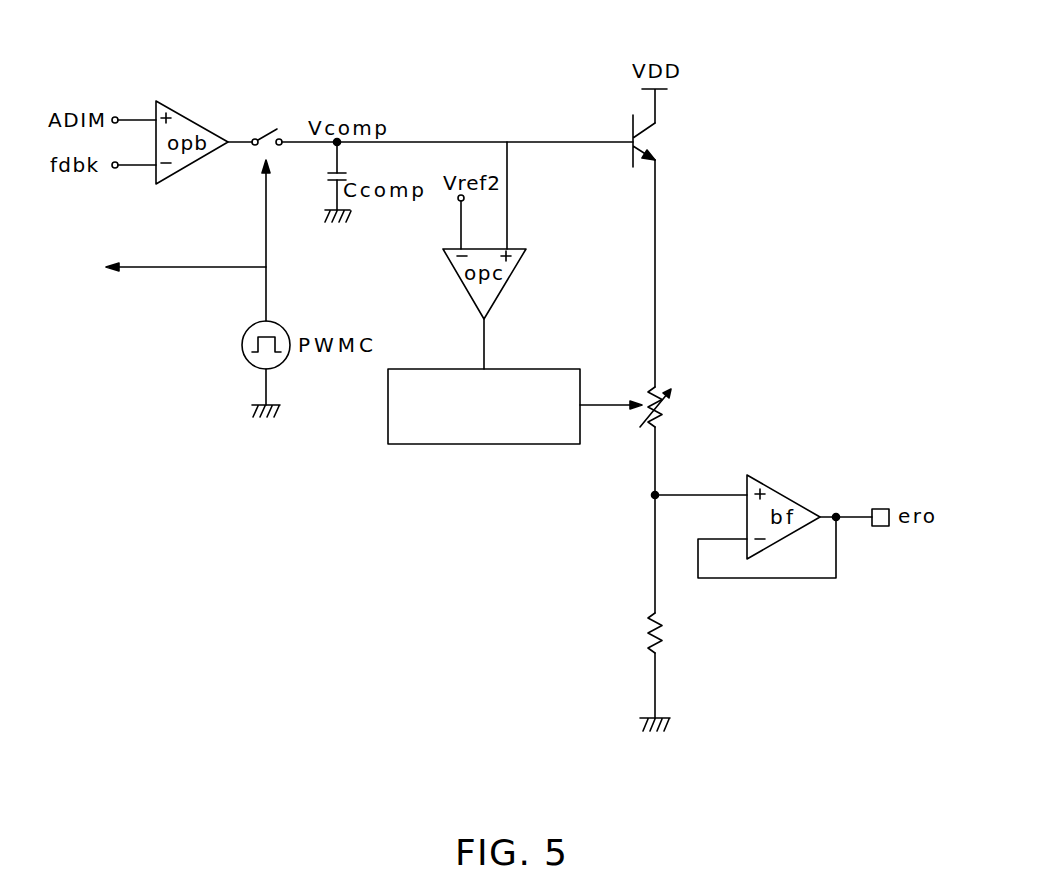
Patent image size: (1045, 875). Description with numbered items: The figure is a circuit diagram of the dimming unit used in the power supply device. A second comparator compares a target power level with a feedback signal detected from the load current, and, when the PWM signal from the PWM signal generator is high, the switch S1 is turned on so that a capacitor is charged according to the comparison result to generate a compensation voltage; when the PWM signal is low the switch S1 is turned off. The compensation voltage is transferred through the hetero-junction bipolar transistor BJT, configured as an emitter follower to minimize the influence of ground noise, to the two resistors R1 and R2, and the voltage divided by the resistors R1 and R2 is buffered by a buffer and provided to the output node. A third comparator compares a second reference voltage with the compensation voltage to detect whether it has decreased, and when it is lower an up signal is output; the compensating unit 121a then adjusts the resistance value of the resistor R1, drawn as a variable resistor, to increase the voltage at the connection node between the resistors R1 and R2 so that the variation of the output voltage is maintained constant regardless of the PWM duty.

The compensating unit 121a is at (521, 369).
The switch S1 is at (269, 120).
The resistor R1 is at (671, 407).
The resistor R2 is at (672, 633).
The hetero-junction bipolar transistor BJT is at (665, 141).